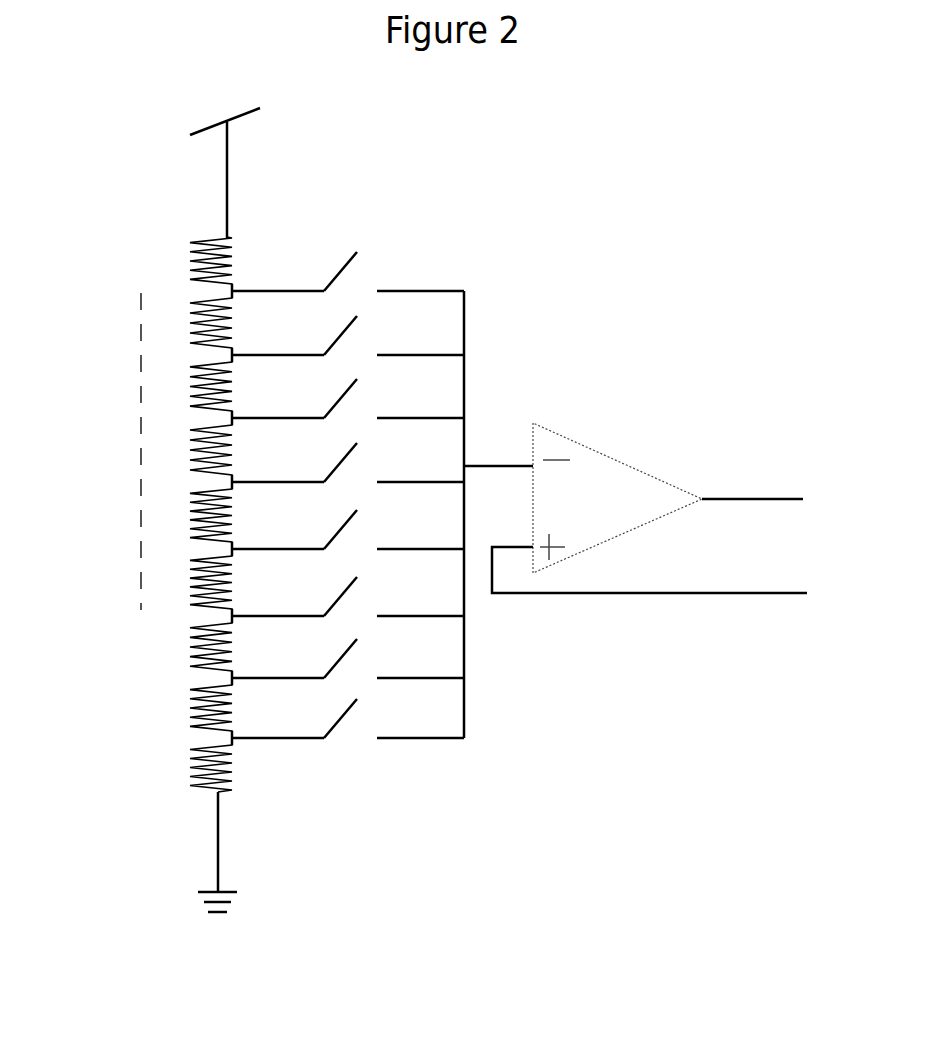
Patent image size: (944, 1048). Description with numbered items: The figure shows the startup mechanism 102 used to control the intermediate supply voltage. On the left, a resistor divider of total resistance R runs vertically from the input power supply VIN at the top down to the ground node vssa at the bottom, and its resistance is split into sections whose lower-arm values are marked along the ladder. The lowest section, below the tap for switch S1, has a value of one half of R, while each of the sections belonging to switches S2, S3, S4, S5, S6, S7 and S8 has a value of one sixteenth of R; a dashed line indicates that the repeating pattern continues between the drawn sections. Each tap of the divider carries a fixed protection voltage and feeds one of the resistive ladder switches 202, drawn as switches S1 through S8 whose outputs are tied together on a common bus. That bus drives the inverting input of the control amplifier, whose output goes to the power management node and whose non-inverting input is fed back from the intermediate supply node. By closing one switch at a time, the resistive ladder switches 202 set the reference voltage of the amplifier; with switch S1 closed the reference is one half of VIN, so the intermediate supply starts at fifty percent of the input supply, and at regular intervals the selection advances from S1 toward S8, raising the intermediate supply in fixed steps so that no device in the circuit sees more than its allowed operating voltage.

The startup mechanism 102 is at (684, 384).
The resistive ladder switches 202 is at (431, 581).
The resistor divider R is at (113, 810).
The input power supply VIN is at (201, 165).
The ground node vssa is at (192, 852).
The switch S1 is at (348, 725).
The switch S2 is at (348, 665).
The switch S3 is at (348, 603).
The switch S4 is at (348, 536).
The switch S5 is at (348, 469).
The switch S6 is at (348, 405).
The switch S7 is at (348, 342).
The switch S8 is at (348, 278).